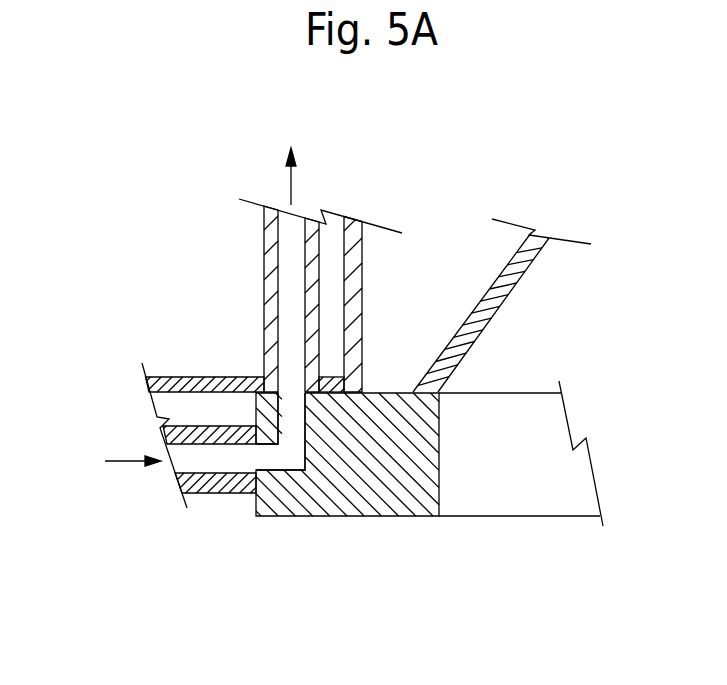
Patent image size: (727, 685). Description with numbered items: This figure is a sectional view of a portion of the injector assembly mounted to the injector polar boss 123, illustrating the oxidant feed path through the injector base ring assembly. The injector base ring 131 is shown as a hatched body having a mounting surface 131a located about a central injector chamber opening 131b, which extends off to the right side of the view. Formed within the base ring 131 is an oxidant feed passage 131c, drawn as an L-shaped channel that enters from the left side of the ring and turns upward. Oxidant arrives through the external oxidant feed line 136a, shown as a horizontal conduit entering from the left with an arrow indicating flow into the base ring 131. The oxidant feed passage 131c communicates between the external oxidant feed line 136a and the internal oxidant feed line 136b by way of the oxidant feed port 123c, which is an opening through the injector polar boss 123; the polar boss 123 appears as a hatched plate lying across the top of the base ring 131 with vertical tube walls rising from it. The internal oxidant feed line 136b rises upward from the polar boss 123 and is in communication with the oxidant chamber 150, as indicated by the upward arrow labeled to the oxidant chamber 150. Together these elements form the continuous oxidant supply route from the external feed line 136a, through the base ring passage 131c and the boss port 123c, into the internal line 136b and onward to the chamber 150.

The injector polar boss 123 is at (188, 380).
The oxidant feed port 123c is at (277, 392).
The injector base ring 131 is at (350, 517).
The mounting surface 131a is at (388, 392).
The central injector chamber opening 131b is at (522, 485).
The oxidant feed passage 131c is at (282, 470).
The external oxidant feed line 136a is at (195, 428).
The internal oxidant feed line 136b is at (320, 235).
The oxidant chamber 150 is at (286, 142).